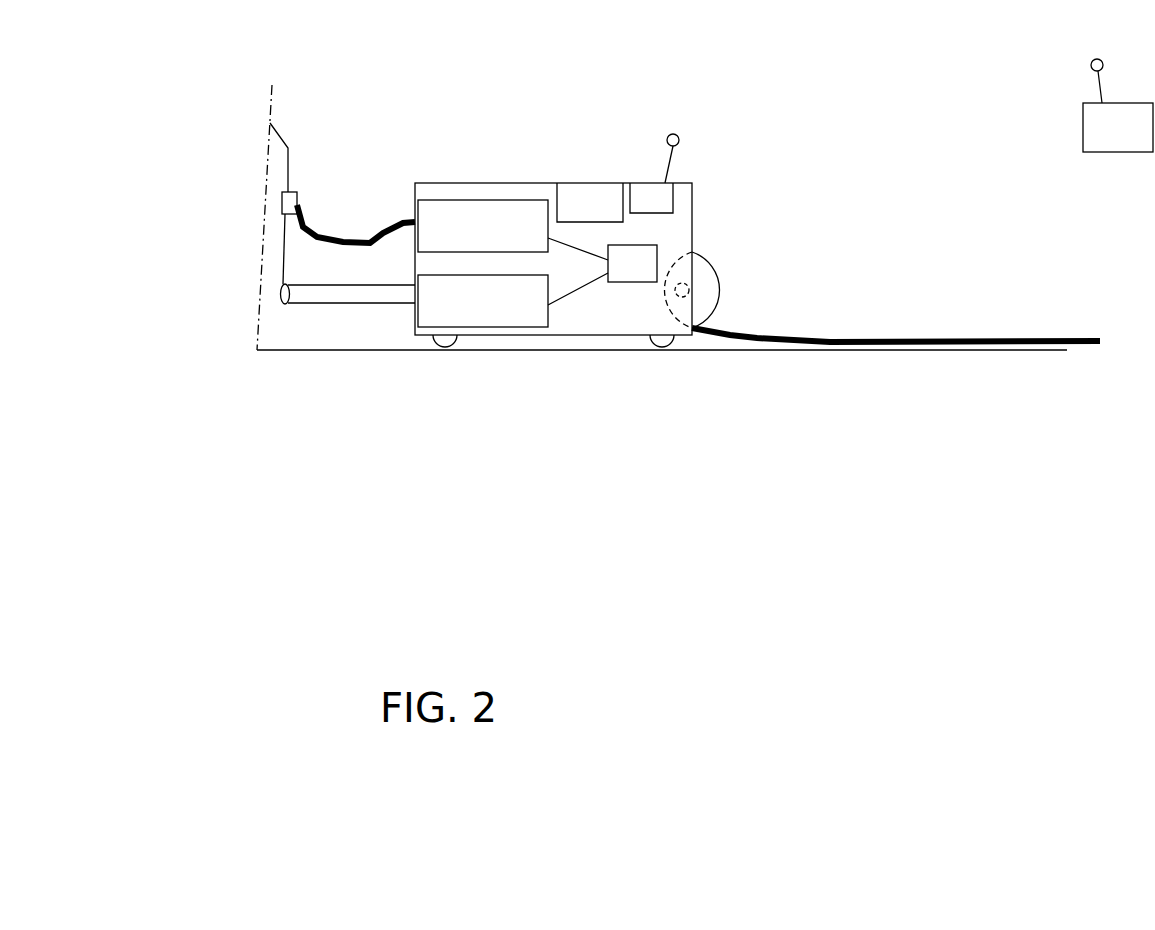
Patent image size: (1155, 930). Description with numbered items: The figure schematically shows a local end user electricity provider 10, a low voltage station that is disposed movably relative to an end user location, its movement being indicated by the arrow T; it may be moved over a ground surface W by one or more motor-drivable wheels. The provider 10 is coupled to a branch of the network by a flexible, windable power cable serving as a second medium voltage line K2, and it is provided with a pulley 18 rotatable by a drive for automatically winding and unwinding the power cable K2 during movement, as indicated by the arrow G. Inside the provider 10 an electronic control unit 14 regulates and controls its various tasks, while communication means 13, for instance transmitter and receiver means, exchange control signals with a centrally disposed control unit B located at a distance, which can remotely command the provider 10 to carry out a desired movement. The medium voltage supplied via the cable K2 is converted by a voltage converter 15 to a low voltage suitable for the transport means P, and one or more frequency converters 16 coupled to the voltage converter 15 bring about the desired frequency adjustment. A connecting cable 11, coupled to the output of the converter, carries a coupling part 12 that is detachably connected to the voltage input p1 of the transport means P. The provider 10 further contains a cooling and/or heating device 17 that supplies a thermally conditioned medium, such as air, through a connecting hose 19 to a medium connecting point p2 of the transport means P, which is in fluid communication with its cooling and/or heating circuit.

The end user electricity provider 10 is at (468, 142).
The connecting cable 11 is at (345, 233).
The coupling part 12 is at (292, 192).
The communication means 13 is at (654, 173).
The electronic control unit 14 is at (590, 202).
The voltage converter 15 is at (602, 271).
The frequency converter 16 is at (483, 226).
The cooling and/or heating device 17 is at (483, 301).
The pulley 18 is at (707, 295).
The connecting hose 19 is at (343, 298).
The transport means P is at (277, 157).
The voltage input p1 is at (272, 214).
The medium connecting point p2 is at (272, 301).
The arrow indicating movement T is at (569, 177).
The arrow indicating winding/unwinding G is at (703, 252).
The second medium voltage line K2 is at (1020, 338).
The ground surface W is at (1013, 350).
The control unit B is at (1118, 105).